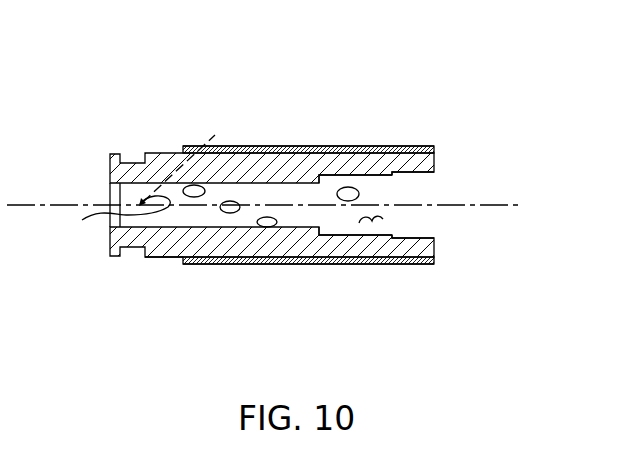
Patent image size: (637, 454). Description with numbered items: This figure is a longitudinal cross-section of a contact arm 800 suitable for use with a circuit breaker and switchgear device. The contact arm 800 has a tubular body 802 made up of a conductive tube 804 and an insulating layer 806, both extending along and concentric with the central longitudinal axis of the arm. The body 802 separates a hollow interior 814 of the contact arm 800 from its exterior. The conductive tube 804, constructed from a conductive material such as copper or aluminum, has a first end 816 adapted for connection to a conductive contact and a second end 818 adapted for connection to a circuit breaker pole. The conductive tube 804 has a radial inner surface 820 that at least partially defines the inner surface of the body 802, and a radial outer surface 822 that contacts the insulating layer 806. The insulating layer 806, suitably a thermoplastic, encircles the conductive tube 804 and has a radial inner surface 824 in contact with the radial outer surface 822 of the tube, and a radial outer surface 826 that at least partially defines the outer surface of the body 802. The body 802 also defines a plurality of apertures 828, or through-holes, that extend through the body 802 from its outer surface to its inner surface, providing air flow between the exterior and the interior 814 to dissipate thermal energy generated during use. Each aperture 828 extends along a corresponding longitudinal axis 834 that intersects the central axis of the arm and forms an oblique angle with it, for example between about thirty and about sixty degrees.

The contact arm 800 is at (511, 54).
The tubular body 802 is at (153, 261).
The conductive tube 804 is at (178, 258).
The insulating layer 806 is at (206, 265).
The hollow interior 814 is at (366, 222).
The first end 816 is at (105, 245).
The second end 818 is at (441, 159).
The radial inner surface 820 is at (318, 236).
The radial outer surface 822 is at (340, 264).
The radial inner surface 824 is at (312, 146).
The radial outer surface 826 is at (335, 146).
The apertures 828 is at (161, 153).
The longitudinal axis 834 is at (205, 148).